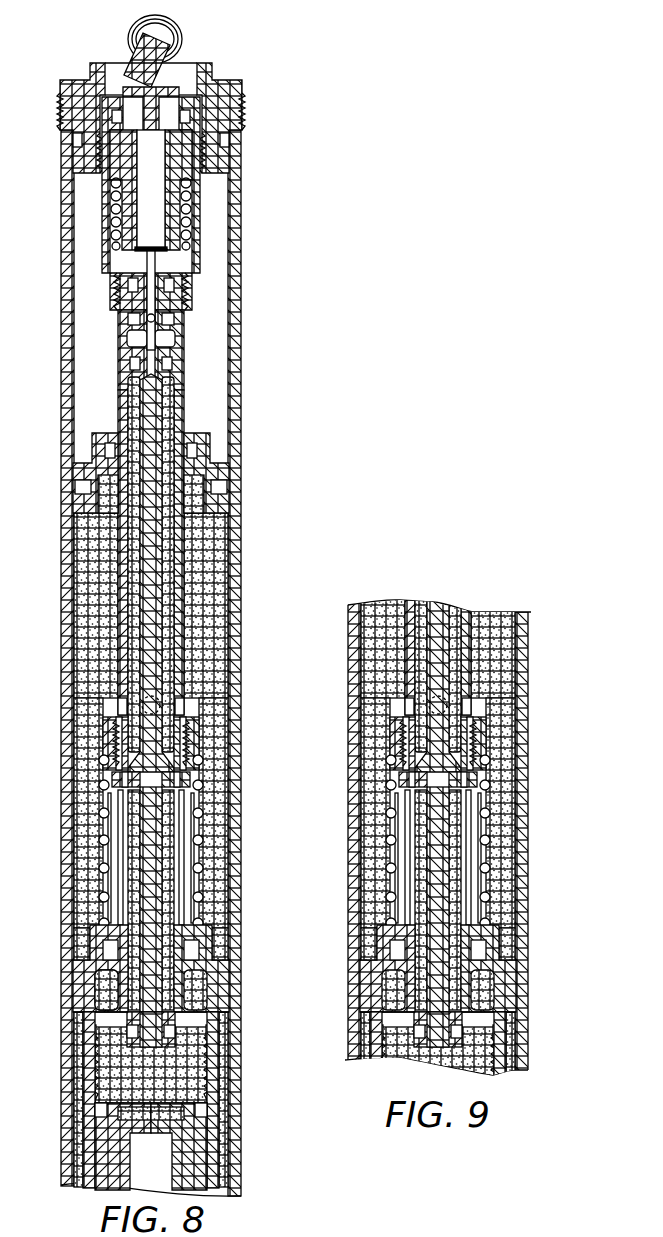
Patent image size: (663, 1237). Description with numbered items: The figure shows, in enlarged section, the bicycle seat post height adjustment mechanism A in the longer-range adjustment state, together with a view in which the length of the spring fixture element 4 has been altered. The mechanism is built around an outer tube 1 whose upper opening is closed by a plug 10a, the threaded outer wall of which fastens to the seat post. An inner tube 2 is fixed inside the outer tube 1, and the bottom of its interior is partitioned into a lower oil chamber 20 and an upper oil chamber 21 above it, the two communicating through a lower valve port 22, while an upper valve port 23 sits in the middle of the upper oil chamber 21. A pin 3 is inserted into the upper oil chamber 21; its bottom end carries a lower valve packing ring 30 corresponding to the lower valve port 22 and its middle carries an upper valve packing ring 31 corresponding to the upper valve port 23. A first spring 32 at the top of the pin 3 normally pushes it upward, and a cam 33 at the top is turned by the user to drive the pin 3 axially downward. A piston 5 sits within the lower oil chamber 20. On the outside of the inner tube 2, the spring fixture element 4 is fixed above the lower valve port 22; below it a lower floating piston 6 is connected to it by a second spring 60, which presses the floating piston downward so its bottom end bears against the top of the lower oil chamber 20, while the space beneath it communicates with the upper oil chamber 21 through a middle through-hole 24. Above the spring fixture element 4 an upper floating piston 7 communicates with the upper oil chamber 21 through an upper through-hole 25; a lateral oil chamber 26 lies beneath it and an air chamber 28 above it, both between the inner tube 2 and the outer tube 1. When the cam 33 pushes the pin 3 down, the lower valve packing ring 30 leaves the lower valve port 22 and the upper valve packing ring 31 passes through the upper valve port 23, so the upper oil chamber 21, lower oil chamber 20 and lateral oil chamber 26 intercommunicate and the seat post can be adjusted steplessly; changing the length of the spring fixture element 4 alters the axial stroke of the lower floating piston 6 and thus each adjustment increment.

In FIG. 8, the outer tube 1 is at (232, 313).
In FIG. 9, the outer tube 1 is at (456, 663).
In FIG. 8, the inner tube 2 is at (180, 552).
In FIG. 9, the inner tube 2 is at (458, 552).
In FIG. 8, the pin 3 is at (155, 583).
In FIG. 9, the pin 3 is at (438, 710).
In FIG. 8, the spring fixture element 4 is at (186, 728).
In FIG. 9, the spring fixture element 4 is at (473, 736).
In FIG. 8, the piston 5 is at (178, 1125).
In FIG. 8, the lower floating piston 6 is at (200, 944).
In FIG. 9, the lower floating piston 6 is at (460, 967).
In FIG. 8, the upper floating piston 7 is at (205, 455).
In FIG. 8, the plug 10a is at (232, 100).
In FIG. 8, the lower oil chamber 20 is at (178, 1073).
In FIG. 9, the lower oil chamber 20 is at (467, 1058).
In FIG. 8, the upper oil chamber 21 is at (165, 421).
In FIG. 9, the upper oil chamber 21 is at (438, 693).
In FIG. 8, the lower valve port 22 is at (180, 1035).
In FIG. 9, the lower valve port 22 is at (494, 1040).
In FIG. 8, the upper valve port 23 is at (175, 804).
In FIG. 9, the upper valve port 23 is at (487, 857).
In FIG. 8, the middle through-hole 24 is at (110, 980).
In FIG. 9, the middle through-hole 24 is at (401, 986).
In FIG. 8, the upper through-hole 25 is at (116, 705).
In FIG. 9, the upper through-hole 25 is at (389, 694).
In FIG. 8, the lateral oil chamber 26 is at (210, 893).
In FIG. 9, the lateral oil chamber 26 is at (473, 850).
In FIG. 8, the air chamber 28 is at (213, 238).
In FIG. 8, the lower valve packing ring 30 is at (88, 1037).
In FIG. 9, the lower valve packing ring 30 is at (407, 1036).
In FIG. 8, the upper valve packing ring 31 is at (172, 778).
In FIG. 9, the upper valve packing ring 31 is at (485, 772).
In FIG. 8, the first spring 32 is at (192, 198).
In FIG. 8, the cam 33 is at (124, 58).
In FIG. 8, the second spring 60 is at (190, 870).
In FIG. 9, the second spring 60 is at (480, 841).
In FIG. 8, the bicycle seat post height adjustment mechanism A is at (258, 503).